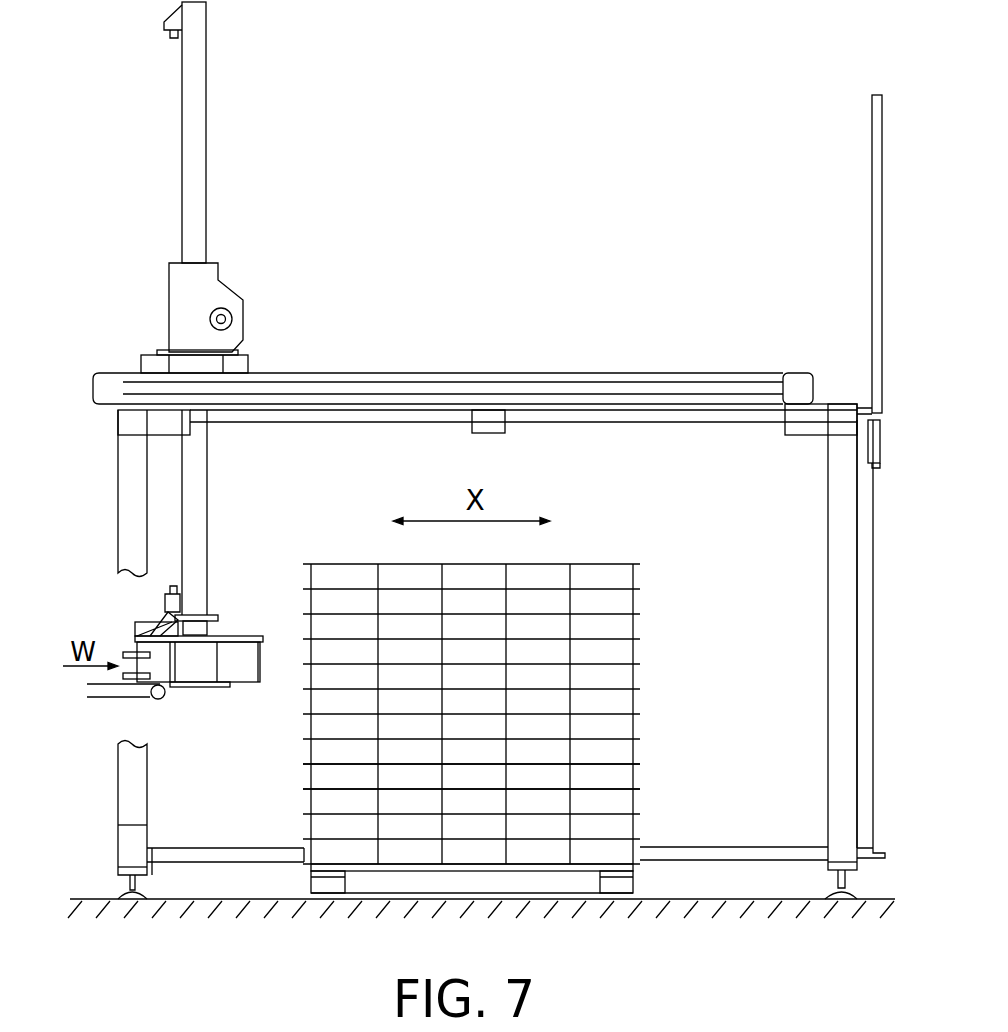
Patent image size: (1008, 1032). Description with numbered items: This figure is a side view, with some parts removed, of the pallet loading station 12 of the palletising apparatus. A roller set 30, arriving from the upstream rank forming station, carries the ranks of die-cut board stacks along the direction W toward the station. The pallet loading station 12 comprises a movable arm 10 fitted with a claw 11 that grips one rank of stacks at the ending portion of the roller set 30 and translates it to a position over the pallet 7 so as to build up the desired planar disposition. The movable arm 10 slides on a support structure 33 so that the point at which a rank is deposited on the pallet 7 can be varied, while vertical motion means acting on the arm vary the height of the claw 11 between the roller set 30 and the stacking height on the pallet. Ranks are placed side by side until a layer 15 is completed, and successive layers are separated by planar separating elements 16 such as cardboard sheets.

The pallet 7 is at (632, 883).
The movable arm 10 is at (232, 280).
The claw 11 is at (150, 605).
The pallet loading station 12 is at (495, 372).
The layer 15 is at (618, 652).
The planar separating elements 16 is at (636, 786).
The roller set 30 is at (117, 700).
The support structure 33 is at (843, 693).